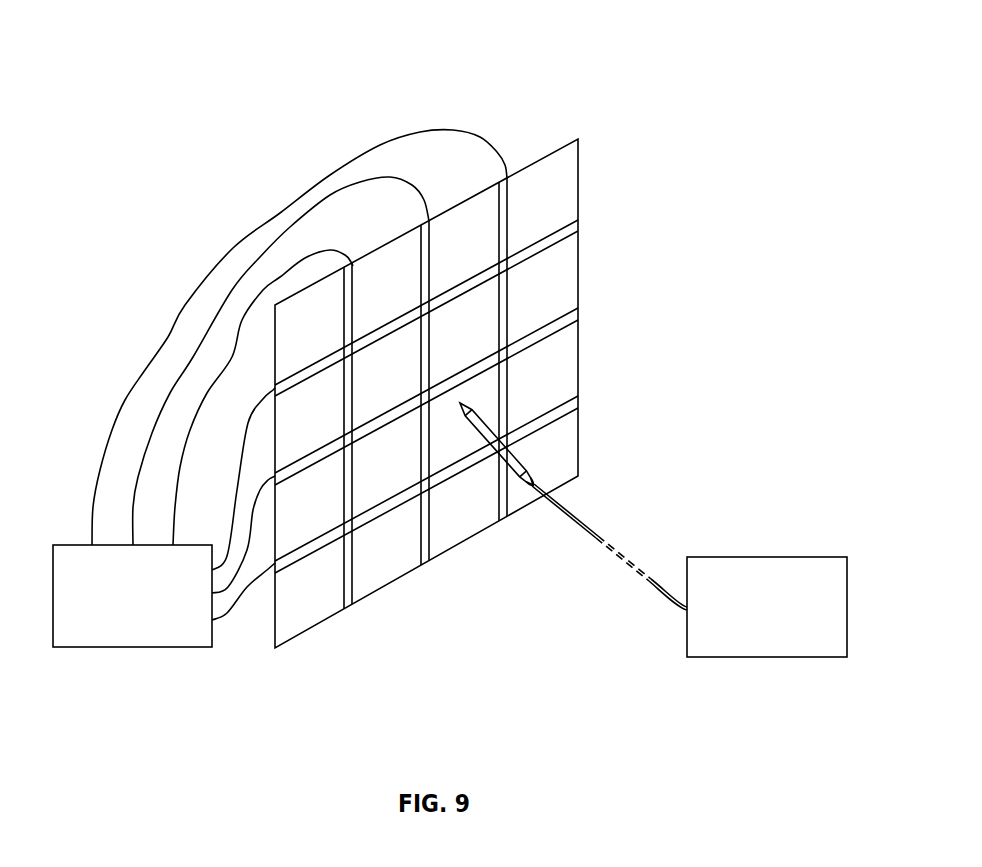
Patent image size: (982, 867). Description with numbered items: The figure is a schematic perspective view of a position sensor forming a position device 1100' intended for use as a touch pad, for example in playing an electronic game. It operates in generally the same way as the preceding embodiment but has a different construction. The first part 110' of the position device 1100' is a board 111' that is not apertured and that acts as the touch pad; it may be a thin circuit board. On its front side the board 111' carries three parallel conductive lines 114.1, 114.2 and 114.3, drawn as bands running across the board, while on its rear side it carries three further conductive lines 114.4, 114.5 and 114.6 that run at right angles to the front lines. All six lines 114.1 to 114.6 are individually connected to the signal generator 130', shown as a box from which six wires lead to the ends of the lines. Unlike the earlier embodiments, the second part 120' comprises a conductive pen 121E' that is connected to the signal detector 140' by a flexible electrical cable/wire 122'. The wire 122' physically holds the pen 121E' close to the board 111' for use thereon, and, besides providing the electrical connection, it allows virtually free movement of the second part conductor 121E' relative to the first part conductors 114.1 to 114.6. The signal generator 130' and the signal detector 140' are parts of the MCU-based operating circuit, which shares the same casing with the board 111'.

The position device 1100' is at (450, 391).
The first part 110' is at (493, 362).
The board 111' is at (488, 388).
The conductive line 114.1 is at (553, 238).
The conductive line 114.2 is at (557, 328).
The conductive line 114.3 is at (557, 413).
The conductive line 114.4 is at (342, 585).
The conductive line 114.5 is at (418, 548).
The conductive line 114.6 is at (497, 503).
The second part 120' is at (625, 552).
The conductive pen 121E' is at (619, 491).
The flexible electrical cable/wire 122' is at (609, 593).
The signal generator 130' is at (280, 432).
The signal detector 140' is at (767, 661).